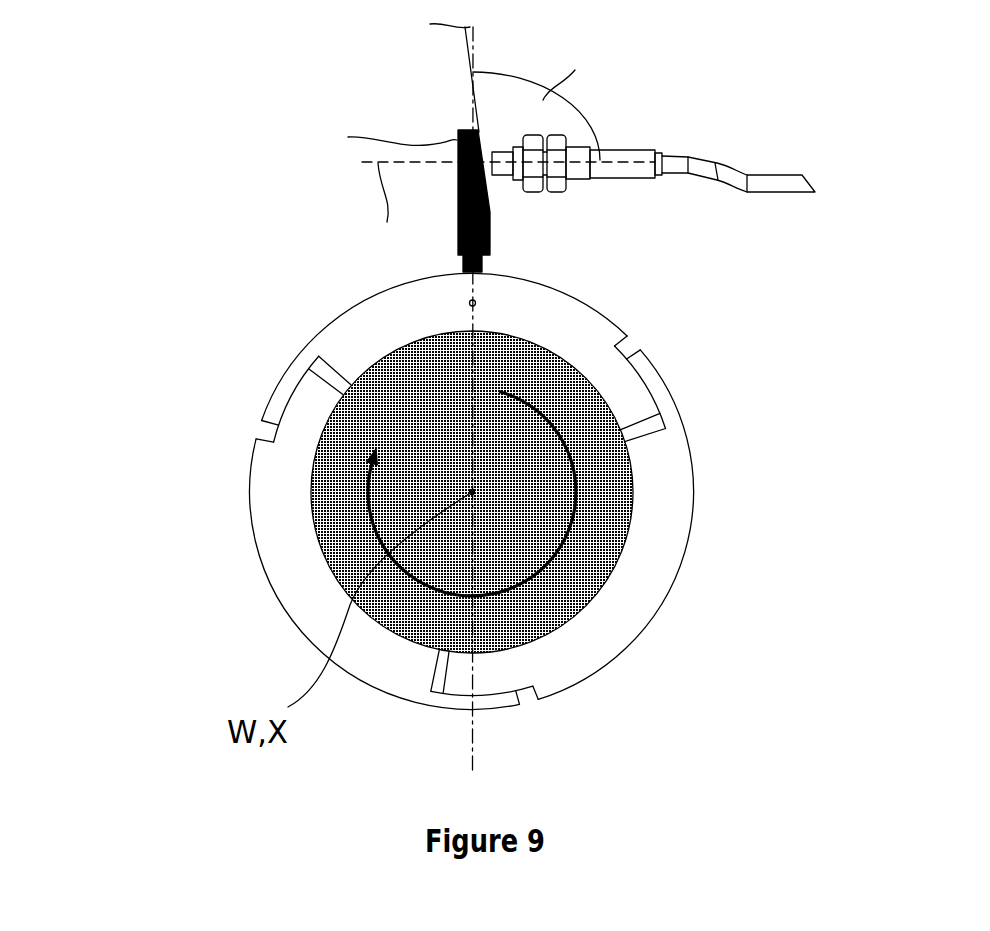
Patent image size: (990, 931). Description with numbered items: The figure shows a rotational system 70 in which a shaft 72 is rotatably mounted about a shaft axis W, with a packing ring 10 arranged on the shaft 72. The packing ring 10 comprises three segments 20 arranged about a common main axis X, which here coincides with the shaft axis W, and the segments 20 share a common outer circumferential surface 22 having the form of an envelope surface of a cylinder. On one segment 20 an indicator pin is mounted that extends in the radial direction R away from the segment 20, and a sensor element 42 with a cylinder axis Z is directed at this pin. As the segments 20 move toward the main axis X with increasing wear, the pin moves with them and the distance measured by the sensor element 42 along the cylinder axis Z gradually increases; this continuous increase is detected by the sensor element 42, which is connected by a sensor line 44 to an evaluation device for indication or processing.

The packing ring 10 is at (262, 285).
The segments 20 is at (568, 328).
The outer circumferential surface 22 is at (590, 677).
The sensor element 42 is at (640, 151).
The sensor line 44 is at (787, 185).
The rotational system 70 is at (569, 529).
The shaft 72 is at (608, 548).